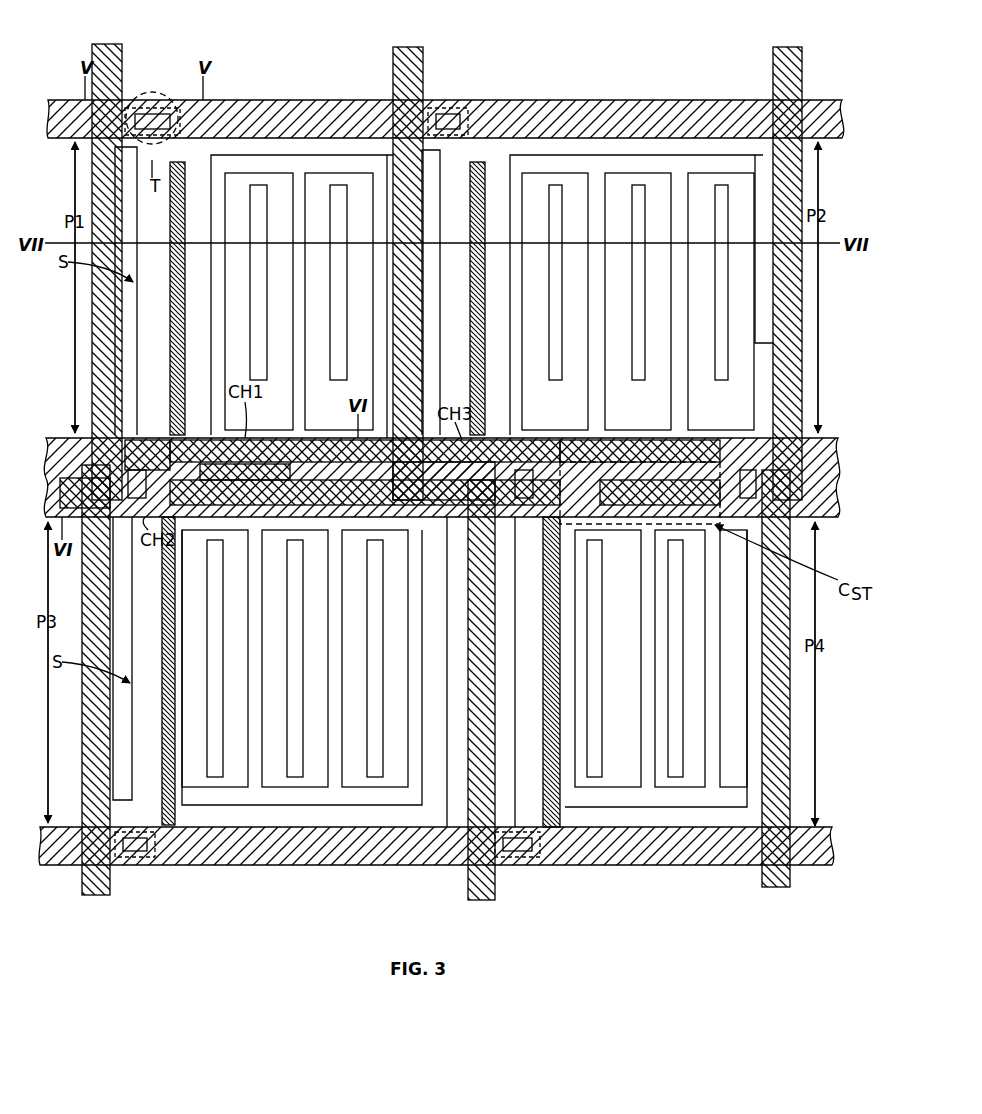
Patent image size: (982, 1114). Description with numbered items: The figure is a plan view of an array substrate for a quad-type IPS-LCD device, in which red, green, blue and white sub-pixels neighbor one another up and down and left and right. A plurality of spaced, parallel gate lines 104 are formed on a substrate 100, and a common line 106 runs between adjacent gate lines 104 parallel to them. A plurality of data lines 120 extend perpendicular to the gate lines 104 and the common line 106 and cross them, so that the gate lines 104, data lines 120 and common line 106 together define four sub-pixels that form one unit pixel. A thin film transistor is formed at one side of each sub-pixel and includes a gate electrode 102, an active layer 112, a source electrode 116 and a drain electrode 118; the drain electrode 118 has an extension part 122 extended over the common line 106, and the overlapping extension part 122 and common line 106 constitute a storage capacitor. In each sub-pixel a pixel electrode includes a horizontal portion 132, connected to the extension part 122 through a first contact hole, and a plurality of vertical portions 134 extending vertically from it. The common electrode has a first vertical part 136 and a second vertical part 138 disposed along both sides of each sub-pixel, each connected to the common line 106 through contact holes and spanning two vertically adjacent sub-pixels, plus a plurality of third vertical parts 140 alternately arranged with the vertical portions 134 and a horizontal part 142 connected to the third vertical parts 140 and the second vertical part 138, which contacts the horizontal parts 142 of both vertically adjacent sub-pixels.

The substrate 100 is at (833, 897).
The gate electrode 102 is at (246, 100).
The gate lines 104 is at (858, 100).
The common line 106 is at (855, 440).
The active layer 112 is at (148, 100).
The source electrode 116 is at (128, 105).
The drain electrode 118 is at (180, 100).
The data lines 120 is at (423, 35).
The extension part 122 is at (300, 438).
The horizontal portion 132 is at (205, 438).
The vertical portions 134 is at (172, 377).
The first vertical part 136 is at (133, 312).
The second vertical part 138 is at (392, 356).
The third vertical parts 140 is at (238, 228).
The horizontal part 142 is at (330, 155).